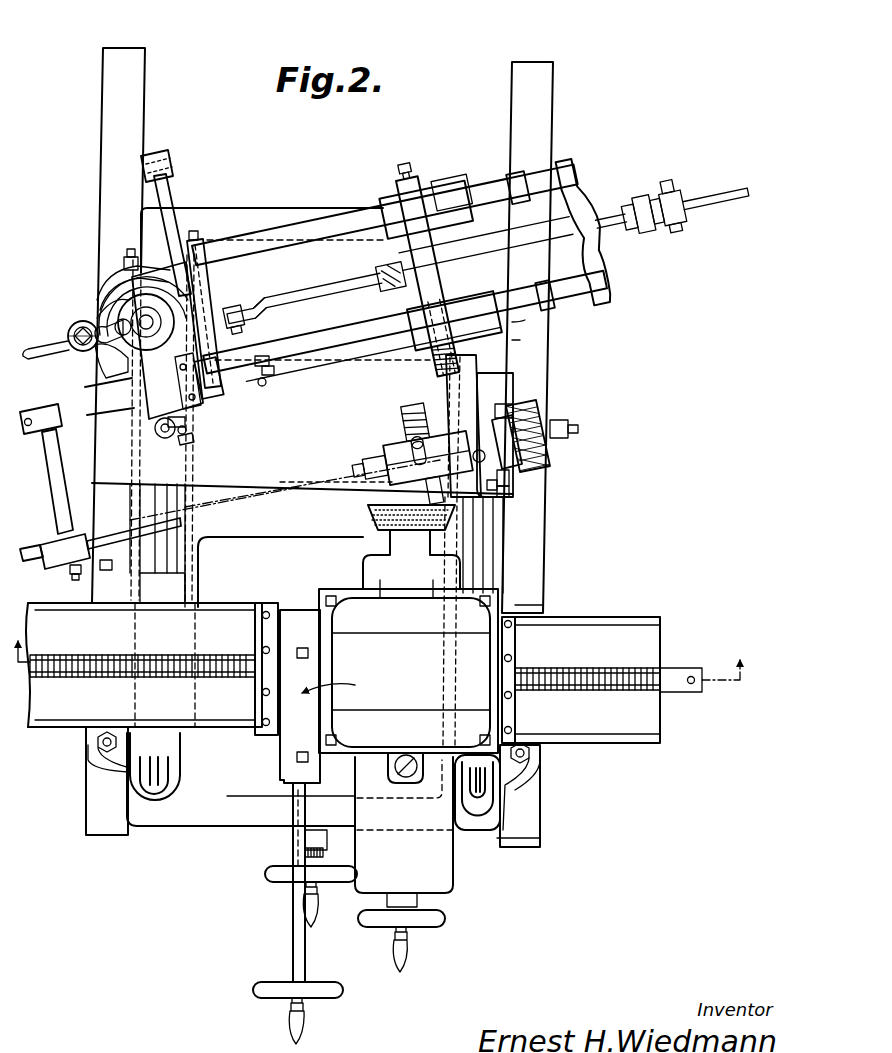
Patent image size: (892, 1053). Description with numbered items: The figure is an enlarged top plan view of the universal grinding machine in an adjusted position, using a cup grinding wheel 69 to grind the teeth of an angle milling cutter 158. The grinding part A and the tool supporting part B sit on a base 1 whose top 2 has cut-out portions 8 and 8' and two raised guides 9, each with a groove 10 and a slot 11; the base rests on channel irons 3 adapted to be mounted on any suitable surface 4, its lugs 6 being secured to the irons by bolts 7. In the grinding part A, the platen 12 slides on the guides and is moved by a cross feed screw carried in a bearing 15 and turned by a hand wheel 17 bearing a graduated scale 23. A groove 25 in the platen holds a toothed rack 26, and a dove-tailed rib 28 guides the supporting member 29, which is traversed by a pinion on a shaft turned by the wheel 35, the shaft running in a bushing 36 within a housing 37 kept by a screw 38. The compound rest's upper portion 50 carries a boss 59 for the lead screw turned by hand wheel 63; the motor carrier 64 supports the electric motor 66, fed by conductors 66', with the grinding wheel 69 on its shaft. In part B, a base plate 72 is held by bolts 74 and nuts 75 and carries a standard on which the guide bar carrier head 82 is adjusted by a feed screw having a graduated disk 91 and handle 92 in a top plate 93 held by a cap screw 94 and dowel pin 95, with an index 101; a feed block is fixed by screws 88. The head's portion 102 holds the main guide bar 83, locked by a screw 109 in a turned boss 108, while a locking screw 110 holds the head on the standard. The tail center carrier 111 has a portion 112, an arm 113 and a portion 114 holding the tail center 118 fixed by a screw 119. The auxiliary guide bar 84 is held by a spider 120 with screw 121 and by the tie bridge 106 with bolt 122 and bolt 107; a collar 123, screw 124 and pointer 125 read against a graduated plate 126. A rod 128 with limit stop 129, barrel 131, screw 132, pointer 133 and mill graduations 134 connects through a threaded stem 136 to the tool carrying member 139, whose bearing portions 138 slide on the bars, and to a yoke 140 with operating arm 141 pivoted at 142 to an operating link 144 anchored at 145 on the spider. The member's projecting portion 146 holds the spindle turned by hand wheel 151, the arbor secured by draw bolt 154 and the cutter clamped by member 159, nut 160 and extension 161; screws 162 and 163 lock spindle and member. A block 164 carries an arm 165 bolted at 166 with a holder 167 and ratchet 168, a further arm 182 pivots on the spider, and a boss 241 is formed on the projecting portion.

The base 1 is at (126, 788).
The top 2 is at (283, 538).
The channel irons 3 is at (101, 212).
The surface 4 is at (379, 646).
The lugs 6 is at (102, 760).
The bolts 7 is at (96, 742).
The cut-out portion 8 is at (246, 839).
The cut-out portion 8' is at (280, 466).
The guides 9 is at (178, 558).
The groove 10 is at (156, 513).
The slot 11 is at (166, 491).
The platen 12 is at (660, 645).
The bearing 15 is at (328, 840).
The hand wheel 17 is at (327, 885).
The graduated scale 23 is at (324, 853).
The groove 25 is at (618, 692).
The toothed rack 26 is at (643, 682).
The dove-tailed rib 28 is at (632, 604).
The supporting member 29 is at (518, 655).
The wheel 35 is at (306, 935).
The bushing 36 is at (285, 797).
The housing 37 is at (268, 736).
The screw 38 is at (296, 759).
The upper portion 50 is at (454, 862).
The boss 59 is at (418, 900).
The hand wheel 63 is at (446, 920).
The motor carrier 64 is at (524, 604).
The electric motor 66 is at (408, 656).
The conductors 66' is at (342, 687).
The grinding wheel 69 is at (372, 525).
The base plate 72 is at (275, 505).
The bolts 74 is at (155, 430).
The nuts 75 is at (161, 432).
The guide bar carrier head 82 is at (140, 400).
The main guide bar 83 is at (318, 356).
The auxiliary guide bar 84 is at (284, 236).
The screws 88 is at (118, 372).
The graduated disk 91 is at (105, 328).
The handle 92 is at (69, 336).
The top plate 93 is at (72, 329).
The cap screw 94 is at (151, 340).
The dowel pin 95 is at (182, 380).
The index 101 is at (80, 352).
The outwardly extending portion 102 is at (186, 422).
The tie bridge 106 is at (550, 200).
The bolt 107 is at (603, 283).
The turned boss 108 is at (186, 432).
The locking screw 109 is at (192, 442).
The locking screw 110 is at (122, 258).
The tail center carrier 111 is at (51, 410).
The horizontally extending portion 112 is at (82, 420).
The arm 113 is at (54, 486).
The horizontally extending portion 114 is at (50, 562).
The tail center 118 is at (113, 567).
The screw 119 is at (75, 580).
The spider 120 is at (236, 318).
The screw 121 is at (198, 232).
The bolt 122 is at (568, 172).
The collar 123 is at (262, 366).
The screw 124 is at (268, 375).
The pointer 125 is at (215, 372).
The graduated plate 126 is at (264, 386).
The rod 128 is at (700, 198).
The limit stop 129 is at (690, 213).
The barrel 131 is at (626, 210).
The screw 132 is at (669, 180).
The pointer 133 is at (680, 224).
The mill graduations 134 is at (642, 196).
The threaded stem 136 is at (462, 186).
The bearing portions 138 is at (410, 318).
The tool carrying member 139 is at (540, 403).
The yoke 140 is at (426, 210).
The operating arm 141 is at (405, 322).
The pivot 142 is at (378, 270).
The operating link 144 is at (293, 293).
The anchor 145 is at (242, 310).
The outwardly projecting portion 146 is at (445, 355).
The hand wheel 151 is at (523, 455).
The draw bolt 154 is at (580, 428).
The angle milling cutter 158 is at (406, 414).
The member 159 is at (385, 450).
The nut 160 is at (362, 465).
The extension 161 is at (372, 478).
The screw 162 is at (510, 497).
The screw 163 is at (405, 157).
The block 164 is at (478, 410).
The arm 165 is at (448, 410).
The bolt 166 is at (510, 478).
The holder 167 is at (400, 448).
The ratchet 168 is at (425, 493).
The arm 182 is at (176, 205).
The boss 241 is at (514, 408).
The grinding part A is at (340, 774).
The tool supporting part B is at (92, 296).